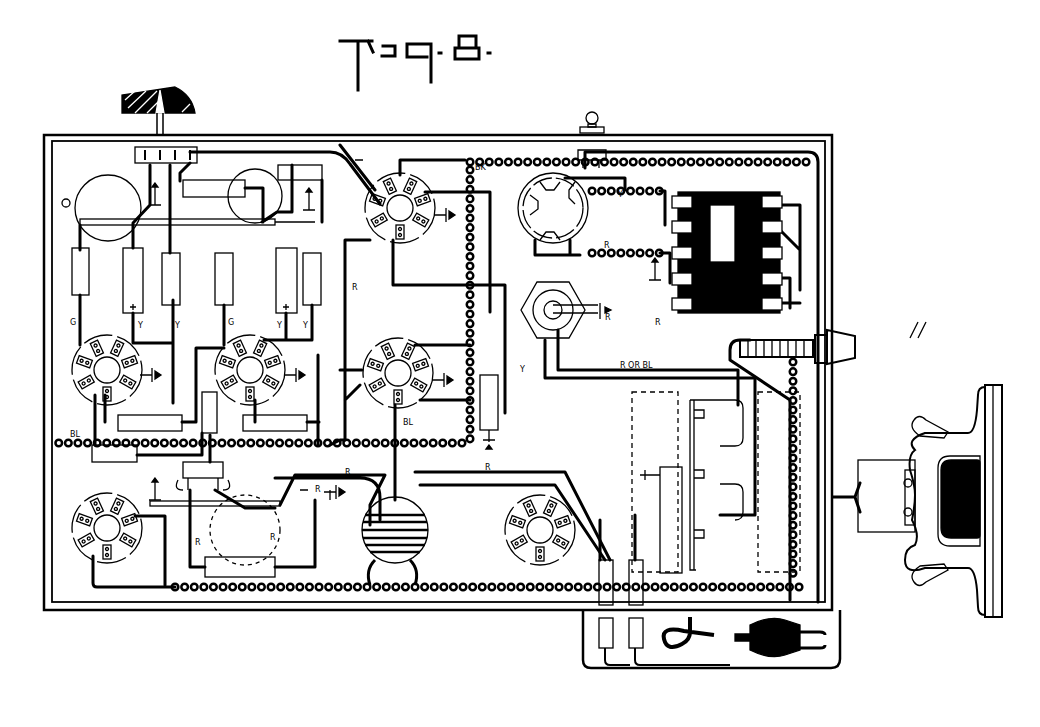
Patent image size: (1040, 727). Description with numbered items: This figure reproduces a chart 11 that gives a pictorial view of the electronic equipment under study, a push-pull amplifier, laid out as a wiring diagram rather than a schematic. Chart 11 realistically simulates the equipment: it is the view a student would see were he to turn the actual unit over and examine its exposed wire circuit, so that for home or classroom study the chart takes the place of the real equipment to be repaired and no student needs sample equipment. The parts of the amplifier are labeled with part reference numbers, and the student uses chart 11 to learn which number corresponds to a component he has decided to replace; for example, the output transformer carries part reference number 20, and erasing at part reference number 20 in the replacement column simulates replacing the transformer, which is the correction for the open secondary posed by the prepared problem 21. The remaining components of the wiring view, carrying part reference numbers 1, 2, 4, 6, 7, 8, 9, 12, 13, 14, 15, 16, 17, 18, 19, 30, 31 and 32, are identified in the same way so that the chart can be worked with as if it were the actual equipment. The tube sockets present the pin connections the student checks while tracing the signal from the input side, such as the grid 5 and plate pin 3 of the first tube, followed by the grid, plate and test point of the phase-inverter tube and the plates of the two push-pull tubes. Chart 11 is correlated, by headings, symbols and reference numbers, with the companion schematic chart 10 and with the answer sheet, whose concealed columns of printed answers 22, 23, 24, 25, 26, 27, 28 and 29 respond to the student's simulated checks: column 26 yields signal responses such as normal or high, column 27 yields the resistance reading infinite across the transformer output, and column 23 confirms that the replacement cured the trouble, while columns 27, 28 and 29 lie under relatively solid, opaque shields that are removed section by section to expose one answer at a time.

The 1 megohm resistor 1 is at (75, 271).
The 12K resistor 2 is at (166, 279).
The plate pin 3 is at (127, 280).
The tube socket V-1 4 is at (116, 370).
The grid 5 is at (242, 536).
The 270K resistor 6 is at (114, 460).
The 25K resistor 7 is at (202, 477).
The .01 MFD capacitor 8 is at (150, 416).
The 1 megohm resistor 9 is at (219, 279).
The chart 10 is at (319, 279).
The chart 11 is at (280, 280).
The tube socket V2 12 is at (260, 370).
The 50K resistor 13 is at (300, 187).
The 50K resistor 14 is at (217, 412).
The .01 MFD capacitor 15 is at (275, 416).
The 500K volume control potentiometer 16 is at (161, 111).
The tube socket V3 17 is at (408, 373).
The tube socket V4 18 is at (410, 208).
The 330 ohm 2W resistor 19 is at (496, 412).
The transformer 20 is at (403, 541).
The prepared problem 21 is at (930, 501).
The column of printed answers 22 is at (214, 182).
The column of printed answers 23 is at (661, 520).
The column of printed answers 24 is at (752, 482).
The column of printed answers 25 is at (687, 482).
The column of printed answers 26 is at (727, 252).
The column of printed answers 27 is at (596, 140).
The column of printed answers 28 is at (780, 637).
The column of printed answers 29 is at (553, 208).
The 2 x 8 MFD electrolytic capacitor 30 is at (566, 302).
The switch 31 is at (797, 344).
The .001 MFD capacitor 32 is at (732, 228).